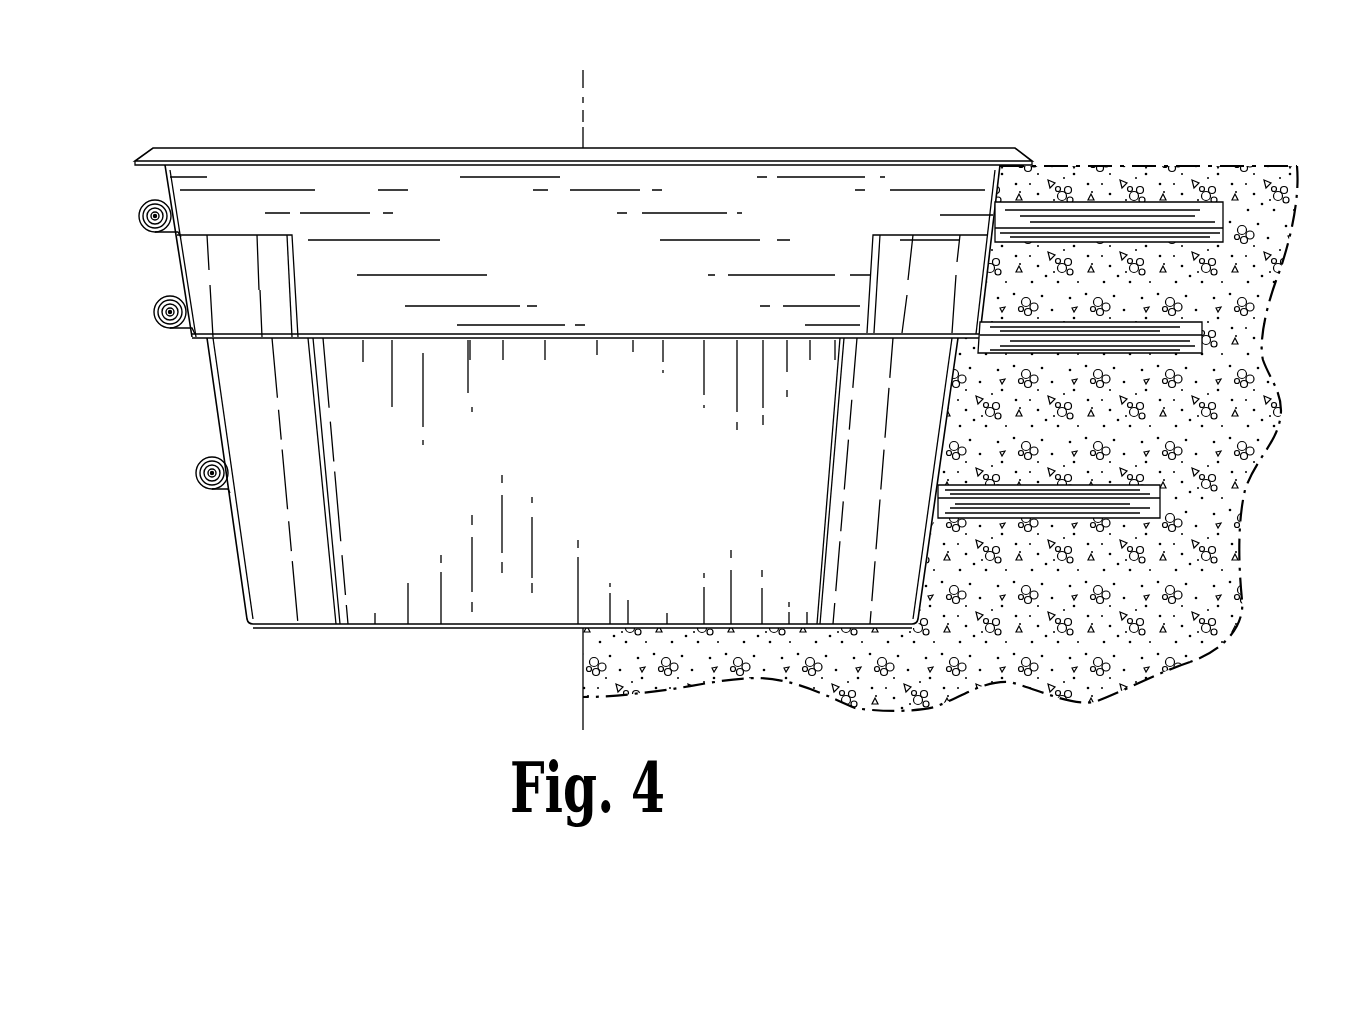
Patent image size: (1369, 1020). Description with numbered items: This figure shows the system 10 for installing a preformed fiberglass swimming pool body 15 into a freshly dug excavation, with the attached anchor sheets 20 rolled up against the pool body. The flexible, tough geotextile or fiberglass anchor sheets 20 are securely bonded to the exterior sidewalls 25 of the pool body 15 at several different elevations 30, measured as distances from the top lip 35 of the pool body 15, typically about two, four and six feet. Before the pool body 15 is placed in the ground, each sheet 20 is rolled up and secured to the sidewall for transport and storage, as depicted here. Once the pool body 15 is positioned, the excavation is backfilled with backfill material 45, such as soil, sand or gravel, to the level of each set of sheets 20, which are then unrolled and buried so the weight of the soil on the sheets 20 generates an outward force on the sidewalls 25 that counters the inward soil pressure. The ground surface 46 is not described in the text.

The system 10 is at (243, 740).
The preformed swimming pool body 15 is at (427, 200).
The anchor sheets 20 is at (1227, 217).
The exterior sidewalls 25 is at (933, 560).
The elevations 30 is at (140, 216).
The top lip 35 is at (1017, 157).
The backfill material 45 is at (1215, 293).
The ground surface 46 is at (1133, 166).